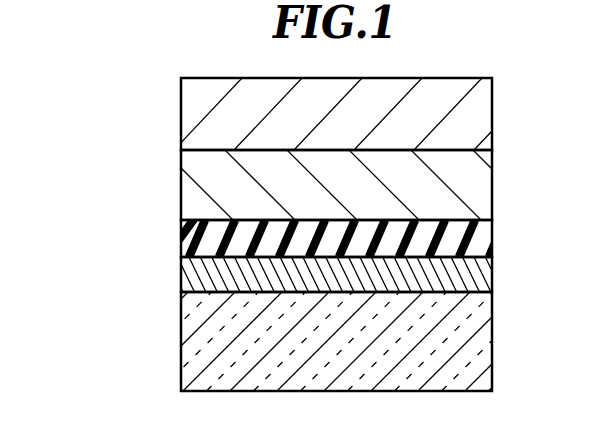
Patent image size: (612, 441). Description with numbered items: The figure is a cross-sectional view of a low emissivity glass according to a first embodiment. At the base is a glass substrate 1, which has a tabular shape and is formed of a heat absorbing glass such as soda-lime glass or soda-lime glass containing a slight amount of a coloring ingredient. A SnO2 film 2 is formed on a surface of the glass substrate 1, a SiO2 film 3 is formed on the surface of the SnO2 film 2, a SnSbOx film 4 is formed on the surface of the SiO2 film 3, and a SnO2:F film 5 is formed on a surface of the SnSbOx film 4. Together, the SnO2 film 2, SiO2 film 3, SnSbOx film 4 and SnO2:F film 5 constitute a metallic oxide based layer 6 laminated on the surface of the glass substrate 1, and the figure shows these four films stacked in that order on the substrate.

The glass substrate 1 is at (180, 343).
The SnO2 film 2 is at (180, 278).
The SiO2 film 3 is at (180, 238).
The SnSbOx film 4 is at (180, 183).
The SnO2:F film 5 is at (180, 113).
The metallic oxide based layer 6 is at (83, 84).